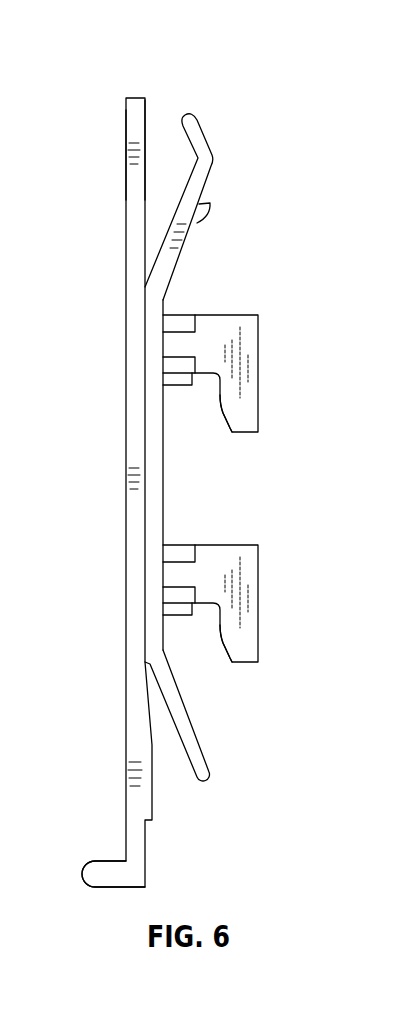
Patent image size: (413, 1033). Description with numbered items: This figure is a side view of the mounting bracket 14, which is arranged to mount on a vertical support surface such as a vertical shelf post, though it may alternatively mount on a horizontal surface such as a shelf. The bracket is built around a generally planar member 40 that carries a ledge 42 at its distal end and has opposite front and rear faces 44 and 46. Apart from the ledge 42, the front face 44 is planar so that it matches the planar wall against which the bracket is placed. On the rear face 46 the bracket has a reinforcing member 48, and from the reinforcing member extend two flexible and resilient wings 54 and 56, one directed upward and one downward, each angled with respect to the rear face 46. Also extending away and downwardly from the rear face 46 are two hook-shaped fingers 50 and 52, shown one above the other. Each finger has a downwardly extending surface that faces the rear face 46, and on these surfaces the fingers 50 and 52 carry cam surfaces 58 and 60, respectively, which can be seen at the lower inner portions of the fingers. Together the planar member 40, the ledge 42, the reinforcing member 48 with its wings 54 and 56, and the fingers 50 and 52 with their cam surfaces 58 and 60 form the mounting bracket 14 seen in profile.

The mounting bracket 14 is at (290, 64).
The planar member 40 is at (133, 97).
The ledge 42 is at (112, 888).
The front face 44 is at (125, 128).
The rear face 46 is at (145, 115).
The reinforcing member 48 is at (163, 462).
The hook-shaped finger 50 is at (258, 340).
The hook-shaped finger 52 is at (258, 570).
The wing 54 is at (212, 173).
The wing 56 is at (197, 730).
The cam surface 58 is at (222, 415).
The cam surface 60 is at (222, 645).